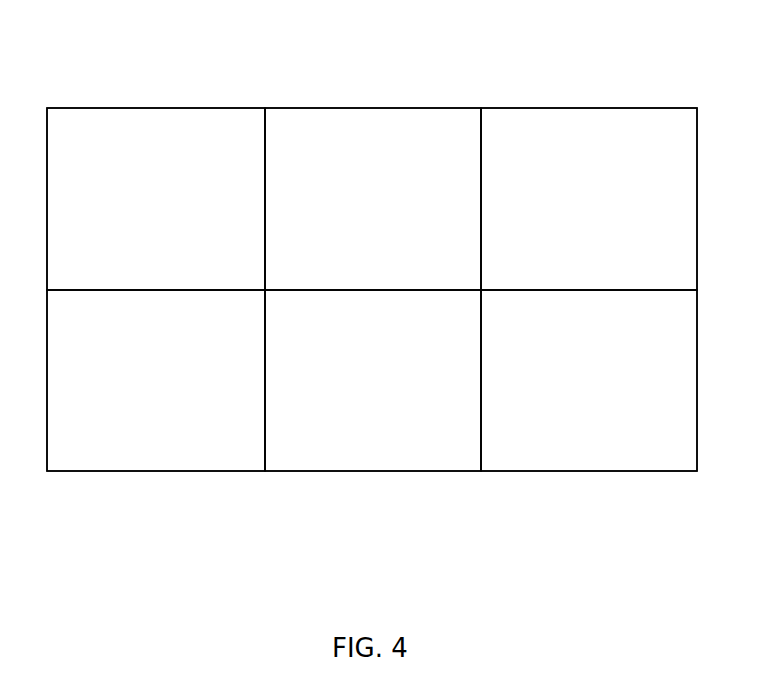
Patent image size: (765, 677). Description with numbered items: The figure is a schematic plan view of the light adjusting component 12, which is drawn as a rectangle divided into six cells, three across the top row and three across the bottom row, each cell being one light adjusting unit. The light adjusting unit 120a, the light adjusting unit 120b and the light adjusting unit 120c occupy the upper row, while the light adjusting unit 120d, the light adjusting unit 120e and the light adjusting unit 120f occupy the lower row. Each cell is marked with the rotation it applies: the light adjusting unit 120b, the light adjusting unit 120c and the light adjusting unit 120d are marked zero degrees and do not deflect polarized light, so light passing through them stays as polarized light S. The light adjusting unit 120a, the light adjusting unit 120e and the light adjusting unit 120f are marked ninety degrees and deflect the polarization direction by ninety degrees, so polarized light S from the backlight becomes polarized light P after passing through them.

The light adjusting component 12 is at (66, 40).
The light adjusting unit 120a is at (152, 140).
The light adjusting unit 120b is at (358, 142).
The light adjusting unit 120c is at (553, 142).
The light adjusting unit 120d is at (165, 452).
The light adjusting unit 120e is at (352, 450).
The light adjusting unit 120f is at (580, 450).